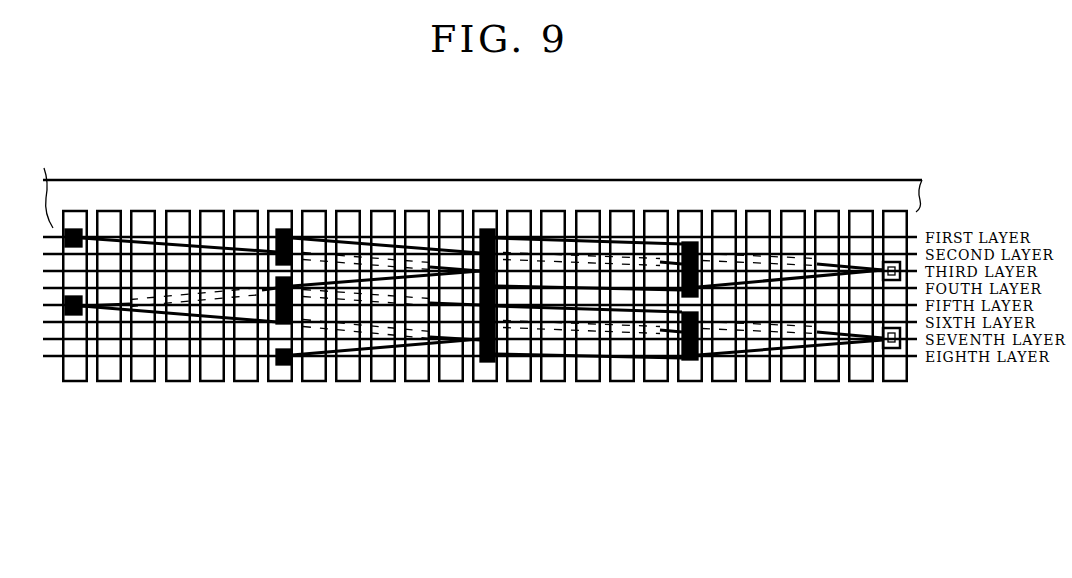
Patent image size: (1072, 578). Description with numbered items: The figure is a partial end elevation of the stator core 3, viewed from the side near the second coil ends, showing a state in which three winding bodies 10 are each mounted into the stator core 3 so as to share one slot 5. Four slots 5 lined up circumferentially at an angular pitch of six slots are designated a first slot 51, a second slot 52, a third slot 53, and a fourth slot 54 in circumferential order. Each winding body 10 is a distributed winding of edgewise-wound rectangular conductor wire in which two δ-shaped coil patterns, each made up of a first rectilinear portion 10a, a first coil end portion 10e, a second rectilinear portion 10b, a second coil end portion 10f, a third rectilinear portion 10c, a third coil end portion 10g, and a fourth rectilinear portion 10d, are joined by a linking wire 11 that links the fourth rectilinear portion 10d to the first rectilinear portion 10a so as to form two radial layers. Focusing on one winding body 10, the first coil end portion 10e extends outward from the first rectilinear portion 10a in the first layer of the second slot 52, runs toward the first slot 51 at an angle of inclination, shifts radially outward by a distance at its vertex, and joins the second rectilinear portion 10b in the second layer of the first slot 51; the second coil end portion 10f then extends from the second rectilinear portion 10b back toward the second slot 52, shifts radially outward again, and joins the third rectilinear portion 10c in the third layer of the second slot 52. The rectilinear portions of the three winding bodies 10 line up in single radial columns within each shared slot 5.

The stator core 3 is at (163, 180).
The slot 5 is at (220, 218).
The first slot 51 is at (888, 382).
The second slot 52 is at (686, 382).
The third slot 53 is at (485, 382).
The fourth slot 54 is at (282, 382).
The winding body 10 is at (388, 355).
The first rectilinear portion 10a is at (705, 237).
The second rectilinear portion 10b is at (897, 257).
The third rectilinear portion 10c is at (697, 233).
The fourth rectilinear portion 10d is at (493, 232).
The first coil end portion 10e is at (755, 230).
The second coil end portion 10f is at (822, 243).
The third coil end portion 10g is at (632, 233).
The linking wire 11 is at (585, 358).